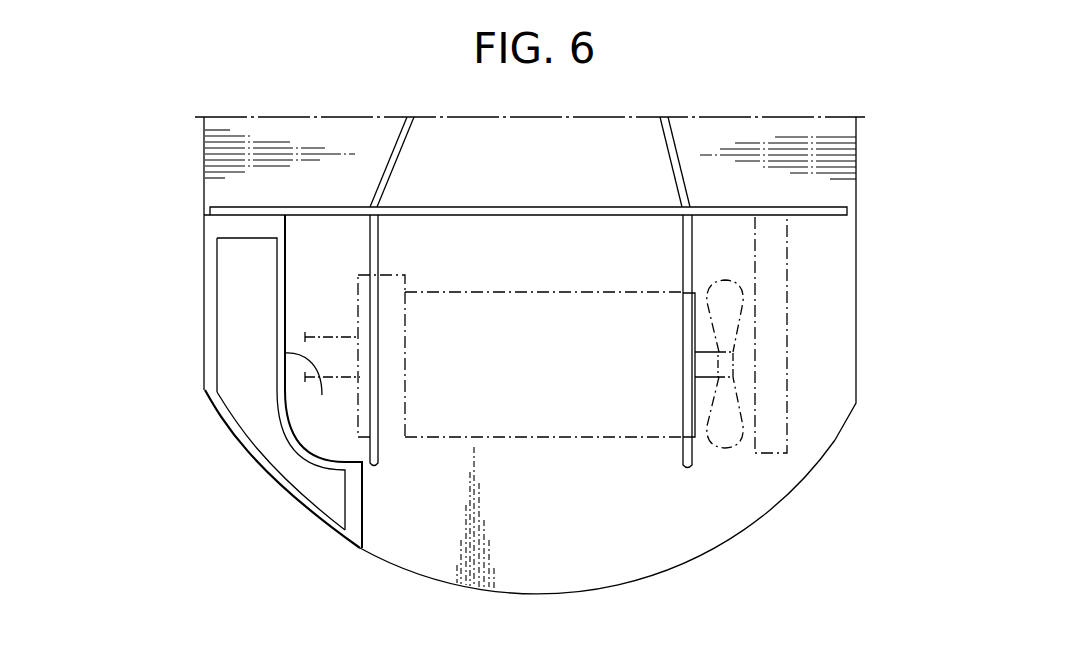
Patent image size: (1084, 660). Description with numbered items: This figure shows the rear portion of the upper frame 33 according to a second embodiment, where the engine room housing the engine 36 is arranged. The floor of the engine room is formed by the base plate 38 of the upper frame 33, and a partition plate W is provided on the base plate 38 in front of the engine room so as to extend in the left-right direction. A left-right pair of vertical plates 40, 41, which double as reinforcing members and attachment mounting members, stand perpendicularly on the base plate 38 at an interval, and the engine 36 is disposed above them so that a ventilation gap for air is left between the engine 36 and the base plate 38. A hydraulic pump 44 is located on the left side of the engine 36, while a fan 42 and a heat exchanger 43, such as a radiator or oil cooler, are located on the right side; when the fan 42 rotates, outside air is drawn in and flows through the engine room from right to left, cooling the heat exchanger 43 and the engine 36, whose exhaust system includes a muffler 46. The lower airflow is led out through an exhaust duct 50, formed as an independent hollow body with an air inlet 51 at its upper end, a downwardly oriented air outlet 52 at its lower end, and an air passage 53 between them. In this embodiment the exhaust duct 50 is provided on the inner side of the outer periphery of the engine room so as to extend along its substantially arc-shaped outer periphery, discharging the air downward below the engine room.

The upper frame 33 is at (197, 172).
The engine 36 is at (522, 439).
The base plate 38 is at (633, 555).
The vertical plate 40 is at (368, 249).
The vertical plate 41 is at (694, 251).
The fan 42 is at (720, 439).
The heat exchanger 43 is at (790, 283).
The hydraulic pump 44 is at (322, 337).
The muffler 46 is at (400, 275).
The exhaust duct 50 is at (254, 381).
The air inlet 51 is at (310, 392).
The air outlet 52 is at (232, 347).
The air passage 53 is at (265, 470).
The partition plate W is at (572, 206).